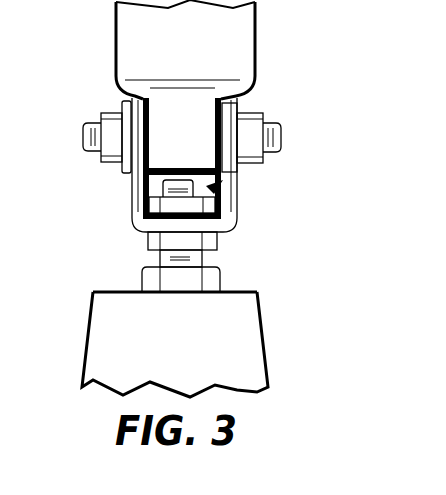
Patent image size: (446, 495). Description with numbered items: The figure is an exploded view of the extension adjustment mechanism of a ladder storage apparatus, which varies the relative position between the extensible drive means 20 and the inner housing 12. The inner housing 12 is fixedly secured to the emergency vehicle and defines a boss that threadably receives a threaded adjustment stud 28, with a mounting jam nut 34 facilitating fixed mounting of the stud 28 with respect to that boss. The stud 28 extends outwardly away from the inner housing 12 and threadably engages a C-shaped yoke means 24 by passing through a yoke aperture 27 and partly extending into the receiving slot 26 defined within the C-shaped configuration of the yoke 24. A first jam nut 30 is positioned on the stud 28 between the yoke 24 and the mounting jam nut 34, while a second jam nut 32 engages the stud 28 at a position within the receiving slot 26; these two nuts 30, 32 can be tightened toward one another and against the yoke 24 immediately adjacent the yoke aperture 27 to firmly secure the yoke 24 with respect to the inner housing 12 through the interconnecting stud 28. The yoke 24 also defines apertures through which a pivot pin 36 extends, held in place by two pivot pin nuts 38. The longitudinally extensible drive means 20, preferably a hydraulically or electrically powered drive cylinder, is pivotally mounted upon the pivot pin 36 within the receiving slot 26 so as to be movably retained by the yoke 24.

The inner housing 12 is at (233, 333).
The longitudinally extensible means 20 is at (197, 52).
The C-shaped yoke means 24 is at (237, 204).
The receiving slot 26 is at (214, 188).
The yoke aperture 27 is at (160, 223).
The threaded adjustment stud 28 is at (143, 178).
The first jam nut 30 is at (219, 246).
The second jam nut 32 is at (134, 217).
The mounting jam nut 34 is at (142, 277).
The pivot pin 36 is at (282, 142).
The pivot pin nuts 38 is at (112, 112).